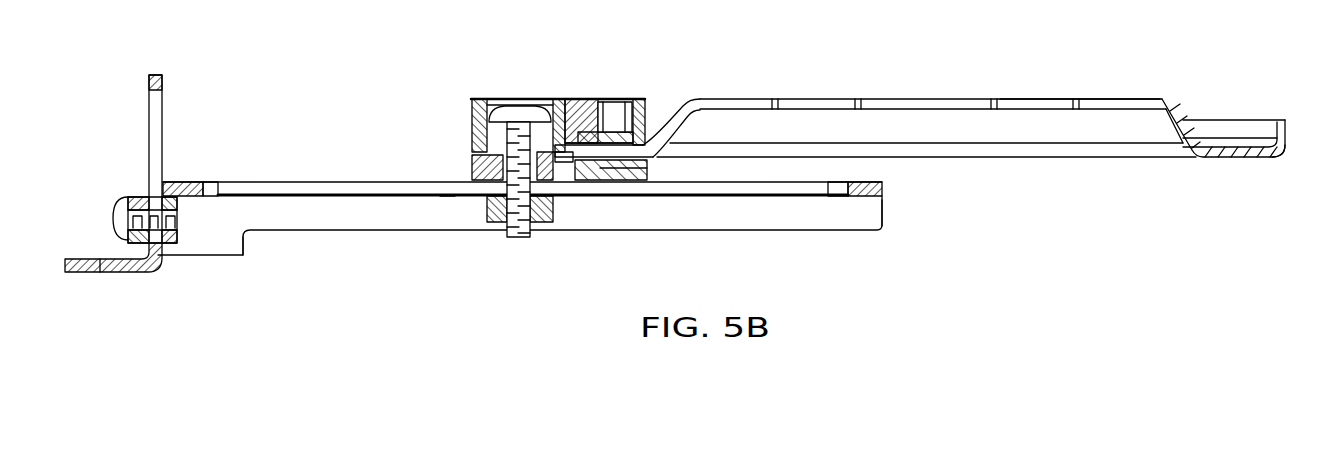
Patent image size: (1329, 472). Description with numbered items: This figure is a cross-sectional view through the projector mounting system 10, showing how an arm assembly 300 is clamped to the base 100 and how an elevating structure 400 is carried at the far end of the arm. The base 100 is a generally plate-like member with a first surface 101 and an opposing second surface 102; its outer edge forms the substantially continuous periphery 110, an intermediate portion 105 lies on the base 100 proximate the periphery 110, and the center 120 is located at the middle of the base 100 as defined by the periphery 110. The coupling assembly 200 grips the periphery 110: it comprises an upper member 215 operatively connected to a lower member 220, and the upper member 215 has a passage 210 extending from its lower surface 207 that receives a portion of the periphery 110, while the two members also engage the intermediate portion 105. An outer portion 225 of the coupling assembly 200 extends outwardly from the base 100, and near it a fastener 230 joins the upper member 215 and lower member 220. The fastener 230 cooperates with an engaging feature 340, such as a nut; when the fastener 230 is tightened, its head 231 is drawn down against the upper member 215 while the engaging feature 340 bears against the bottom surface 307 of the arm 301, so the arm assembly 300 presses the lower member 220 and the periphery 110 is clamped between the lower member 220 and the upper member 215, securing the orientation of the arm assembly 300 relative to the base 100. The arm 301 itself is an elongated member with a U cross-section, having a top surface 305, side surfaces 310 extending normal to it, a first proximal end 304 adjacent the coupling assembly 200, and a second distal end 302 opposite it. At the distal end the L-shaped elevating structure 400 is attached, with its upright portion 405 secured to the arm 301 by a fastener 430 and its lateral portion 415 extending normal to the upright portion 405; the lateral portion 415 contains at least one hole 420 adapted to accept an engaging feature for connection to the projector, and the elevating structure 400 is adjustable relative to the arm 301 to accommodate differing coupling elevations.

The mounting system 10 is at (929, 40).
The base 100 is at (803, 98).
The first surface 101 is at (1083, 99).
The second surface 102 is at (1263, 159).
The intermediate portion 105 is at (626, 168).
The periphery 110 is at (577, 182).
The center 120 is at (944, 166).
The coupling assembly 200 is at (621, 67).
The lower surface 207 is at (470, 146).
The passage 210 is at (627, 100).
The upper member 215 is at (468, 100).
The lower member 220 is at (470, 168).
The outer portion 225 is at (572, 100).
The fastener 230 is at (513, 104).
The head 231 is at (496, 100).
The arm assembly 300 is at (326, 126).
The arm 301 is at (400, 213).
The second distal end 302 is at (170, 181).
The first proximal end 304 is at (885, 215).
The top surface 305 is at (250, 182).
The bottom surface 307 is at (447, 197).
The side surface 310 is at (285, 213).
The engaging feature 340 is at (490, 222).
The elevating structure 400 is at (155, 75).
The upright portion 405 is at (149, 130).
The lateral portion 415 is at (129, 273).
The hole 420 is at (97, 273).
The fastener 430 is at (114, 214).